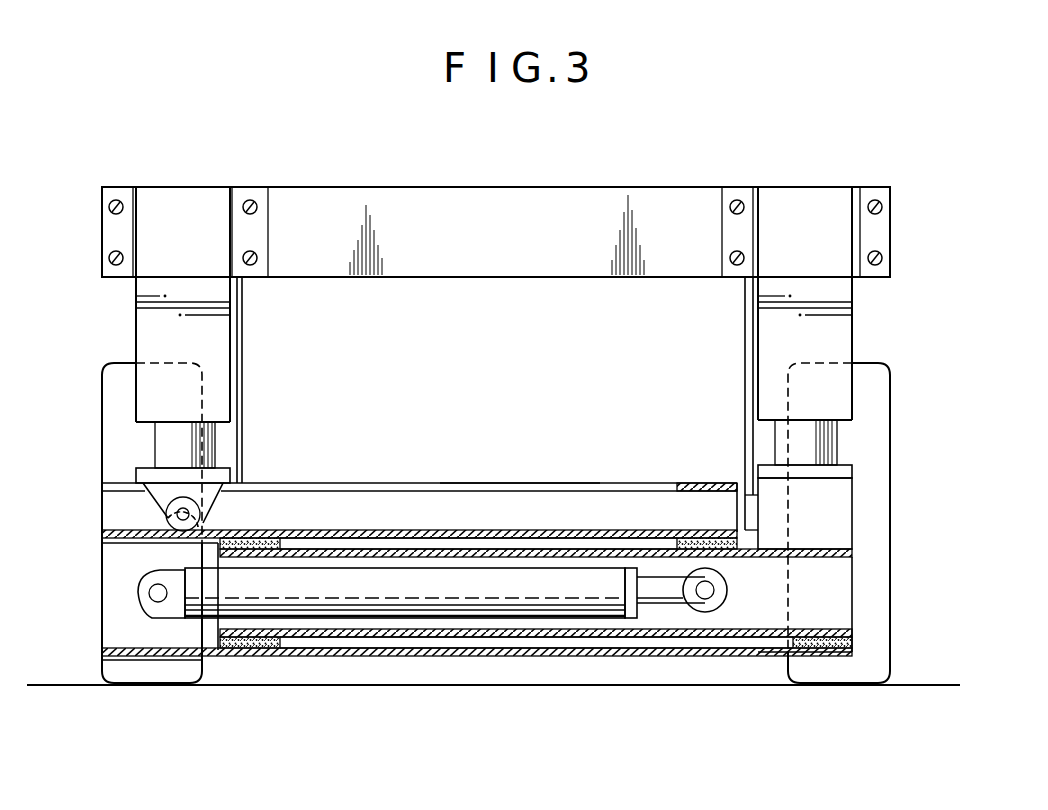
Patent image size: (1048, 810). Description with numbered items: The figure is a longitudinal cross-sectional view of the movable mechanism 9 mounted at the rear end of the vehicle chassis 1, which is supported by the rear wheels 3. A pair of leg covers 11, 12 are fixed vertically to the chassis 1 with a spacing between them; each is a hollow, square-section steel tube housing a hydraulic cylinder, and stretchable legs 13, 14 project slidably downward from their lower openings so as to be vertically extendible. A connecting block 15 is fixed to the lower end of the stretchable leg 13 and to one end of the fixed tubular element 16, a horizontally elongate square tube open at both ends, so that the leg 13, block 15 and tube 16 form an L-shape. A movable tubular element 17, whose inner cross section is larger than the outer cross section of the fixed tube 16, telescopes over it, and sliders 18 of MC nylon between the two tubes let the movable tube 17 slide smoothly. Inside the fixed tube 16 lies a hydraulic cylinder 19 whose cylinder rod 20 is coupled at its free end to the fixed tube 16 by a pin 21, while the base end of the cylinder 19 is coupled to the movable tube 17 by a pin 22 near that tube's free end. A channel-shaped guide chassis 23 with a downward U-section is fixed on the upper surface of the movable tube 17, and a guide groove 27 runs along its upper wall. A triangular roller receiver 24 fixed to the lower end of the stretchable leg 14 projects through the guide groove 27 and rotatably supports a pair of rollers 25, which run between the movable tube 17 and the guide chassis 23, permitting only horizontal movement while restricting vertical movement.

The vehicle chassis 1 is at (684, 200).
The rear wheels 3 is at (103, 397).
The movable mechanism 9 is at (885, 313).
The leg cover 11 is at (810, 200).
The leg cover 12 is at (195, 200).
The stretchable leg 13 is at (815, 447).
The stretchable leg 14 is at (160, 445).
The connecting block 15 is at (845, 515).
The fixed tubular element 16 is at (845, 600).
The movable tubular element 17 is at (432, 660).
The sliders 18 is at (262, 548).
The hydraulic cylinder 19 is at (373, 592).
The cylinder rod 20 is at (657, 590).
The pin 21 is at (708, 597).
The pin 22 is at (153, 590).
The channel-shaped guide chassis 23 is at (425, 496).
The triangular roller receiver 24 is at (162, 495).
The rollers 25 is at (165, 508).
The guide groove 27 is at (515, 496).